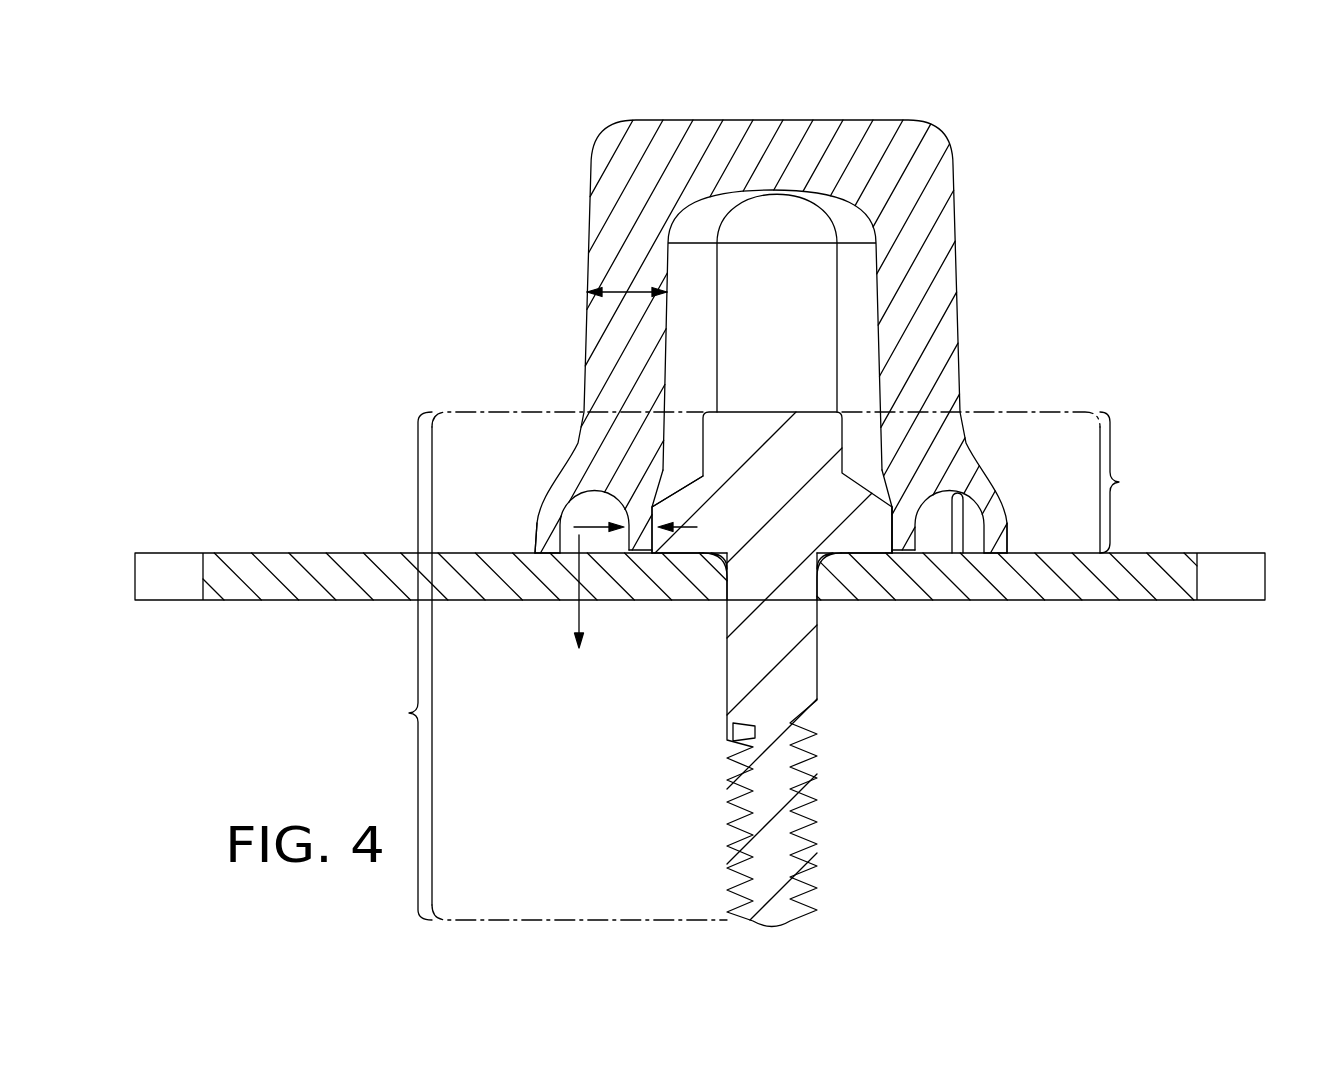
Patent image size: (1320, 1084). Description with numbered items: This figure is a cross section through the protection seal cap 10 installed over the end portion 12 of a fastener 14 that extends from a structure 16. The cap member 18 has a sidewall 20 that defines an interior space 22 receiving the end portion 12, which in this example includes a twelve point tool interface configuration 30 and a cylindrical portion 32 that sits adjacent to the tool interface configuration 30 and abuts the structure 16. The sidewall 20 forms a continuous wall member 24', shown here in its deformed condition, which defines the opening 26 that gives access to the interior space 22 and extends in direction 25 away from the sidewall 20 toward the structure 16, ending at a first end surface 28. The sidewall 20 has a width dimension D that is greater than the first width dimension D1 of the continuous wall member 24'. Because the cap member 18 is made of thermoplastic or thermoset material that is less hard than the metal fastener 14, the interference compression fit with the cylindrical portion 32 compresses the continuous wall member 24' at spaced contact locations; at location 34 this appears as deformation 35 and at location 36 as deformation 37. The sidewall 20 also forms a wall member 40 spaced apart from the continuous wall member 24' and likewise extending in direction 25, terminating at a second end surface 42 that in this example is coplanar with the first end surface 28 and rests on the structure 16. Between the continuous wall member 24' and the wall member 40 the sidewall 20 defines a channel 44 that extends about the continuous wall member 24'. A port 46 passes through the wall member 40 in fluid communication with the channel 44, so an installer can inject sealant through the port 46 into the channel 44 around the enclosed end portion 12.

The protection seal cap 10 is at (977, 110).
The end portion 12 is at (1122, 480).
The fastener 14 is at (408, 713).
The structure 16 is at (283, 565).
The cap member 18 is at (969, 265).
The sidewall 20 is at (632, 275).
The interior space 22 is at (676, 337).
The continuous wall member 24' is at (825, 616).
The direction 25 is at (575, 612).
The opening 26 is at (693, 568).
The first end surface 28 is at (637, 555).
The tool interface configuration 30 is at (758, 426).
The cylindrical portion 32 is at (870, 516).
The location 34 is at (903, 492).
The deformation 35 is at (879, 475).
The location 36 is at (670, 503).
The deformation 37 is at (640, 493).
The wall member 40 is at (537, 530).
The second end surface 42 is at (543, 555).
The channel 44 is at (588, 497).
The port 46 is at (940, 495).
The width dimension D is at (610, 294).
The first width dimension D1 is at (574, 527).